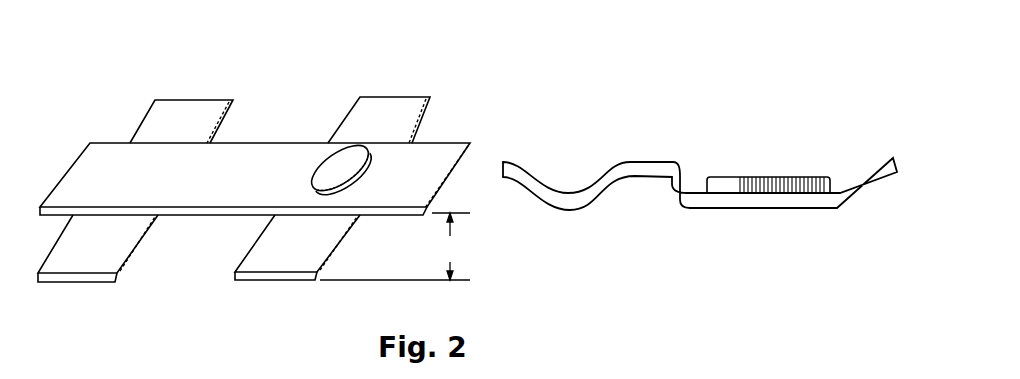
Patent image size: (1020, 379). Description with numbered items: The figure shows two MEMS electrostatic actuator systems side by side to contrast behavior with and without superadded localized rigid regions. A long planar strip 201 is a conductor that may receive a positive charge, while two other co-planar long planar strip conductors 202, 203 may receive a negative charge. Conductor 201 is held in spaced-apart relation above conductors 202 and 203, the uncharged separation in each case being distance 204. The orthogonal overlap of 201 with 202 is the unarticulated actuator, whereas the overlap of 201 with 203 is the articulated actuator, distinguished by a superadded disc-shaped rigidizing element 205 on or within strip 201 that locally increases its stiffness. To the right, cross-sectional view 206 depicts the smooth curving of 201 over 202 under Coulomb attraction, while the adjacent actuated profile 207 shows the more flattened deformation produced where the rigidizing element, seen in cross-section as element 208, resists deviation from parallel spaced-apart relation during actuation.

The long planar strip conductor 201 is at (82, 154).
The conductor 202 is at (100, 283).
The conductor 203 is at (268, 280).
The distance 204 is at (395, 246).
The rigidizing element 205 is at (335, 166).
The cross-sectional view 206 is at (640, 227).
The actuated profile 207 is at (890, 223).
The rigidizing element in cross-section 208 is at (770, 177).